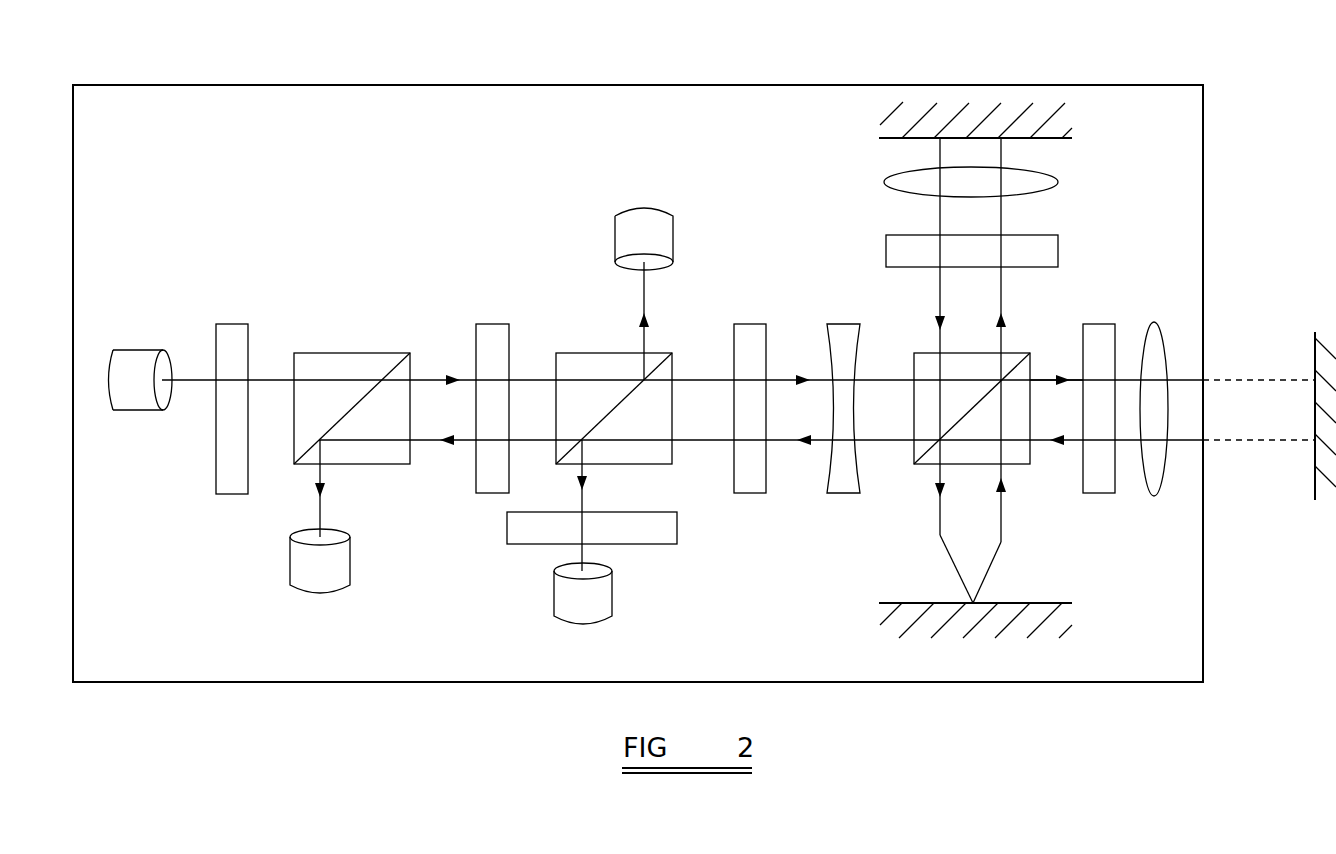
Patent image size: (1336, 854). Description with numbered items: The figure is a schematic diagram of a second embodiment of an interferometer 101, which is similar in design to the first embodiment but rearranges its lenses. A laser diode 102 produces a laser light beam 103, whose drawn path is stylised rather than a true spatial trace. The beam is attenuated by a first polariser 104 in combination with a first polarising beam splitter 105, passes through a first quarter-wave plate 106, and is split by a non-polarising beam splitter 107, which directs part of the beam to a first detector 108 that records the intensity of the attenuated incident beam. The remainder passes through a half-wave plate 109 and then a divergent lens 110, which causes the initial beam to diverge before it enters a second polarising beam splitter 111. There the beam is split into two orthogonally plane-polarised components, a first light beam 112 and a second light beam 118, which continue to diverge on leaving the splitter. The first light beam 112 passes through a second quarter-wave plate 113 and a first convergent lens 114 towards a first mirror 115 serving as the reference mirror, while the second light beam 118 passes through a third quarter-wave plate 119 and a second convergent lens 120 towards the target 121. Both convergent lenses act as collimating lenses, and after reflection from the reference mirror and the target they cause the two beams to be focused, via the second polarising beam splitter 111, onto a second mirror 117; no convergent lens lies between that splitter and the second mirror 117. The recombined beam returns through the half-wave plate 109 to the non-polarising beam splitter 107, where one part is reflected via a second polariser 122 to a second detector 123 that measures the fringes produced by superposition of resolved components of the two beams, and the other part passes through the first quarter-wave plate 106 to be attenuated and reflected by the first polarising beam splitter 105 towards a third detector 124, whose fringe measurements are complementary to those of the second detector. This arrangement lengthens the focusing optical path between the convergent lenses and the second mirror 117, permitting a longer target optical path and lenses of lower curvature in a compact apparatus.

The interferometer 101 is at (1208, 197).
The laser diode 102 is at (133, 343).
The laser light beam 103 is at (191, 391).
The first polariser 104 is at (233, 320).
The first polarising beam splitter 105 is at (350, 350).
The first quarter-wave plate 106 is at (491, 320).
The non-polarising beam splitter 107 is at (595, 350).
The first detector 108 is at (676, 230).
The half-wave plate 109 is at (746, 320).
The divergent lens 110 is at (842, 320).
The second polarising beam splitter 111 is at (906, 461).
The first light beam 112 is at (1006, 281).
The second quarter-wave plate 113 is at (1037, 230).
The first convergent lens 114 is at (1059, 174).
The first mirror 115 is at (903, 140).
The second mirror 117 is at (902, 602).
The second light beam 118 is at (1071, 374).
The third quarter-wave plate 119 is at (1100, 497).
The second convergent lens 120 is at (1156, 500).
The target 121 is at (1310, 466).
The second polariser 122 is at (504, 524).
The second detector 123 is at (551, 601).
The third detector 124 is at (288, 561).